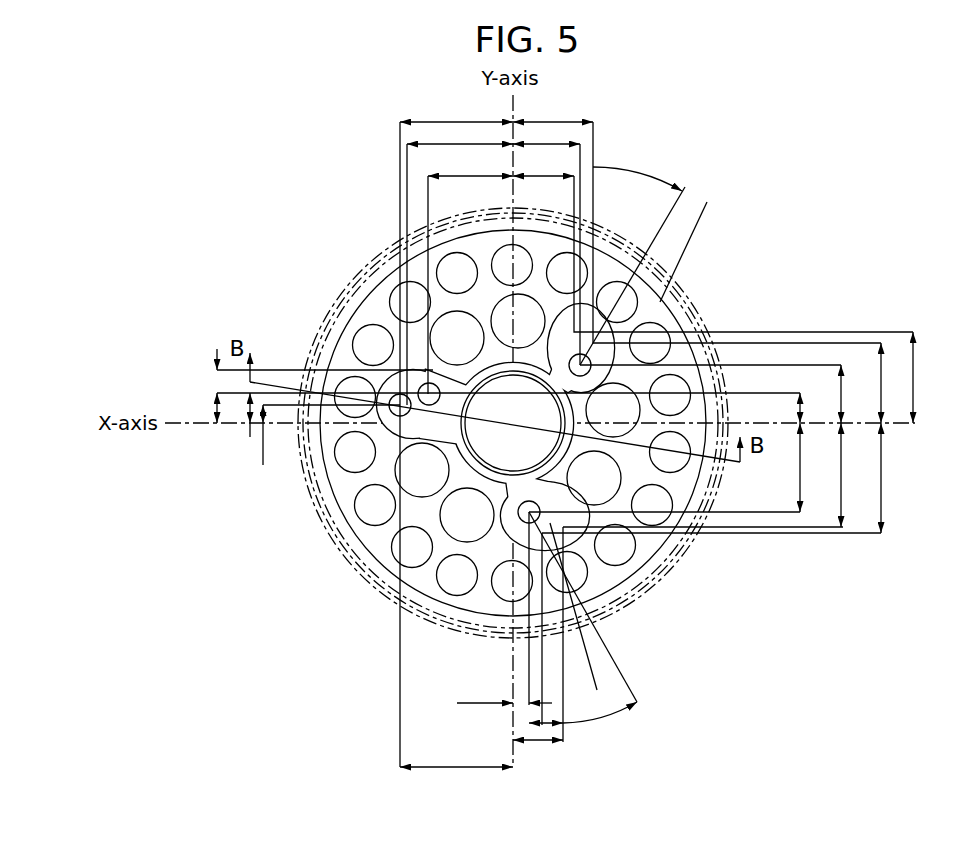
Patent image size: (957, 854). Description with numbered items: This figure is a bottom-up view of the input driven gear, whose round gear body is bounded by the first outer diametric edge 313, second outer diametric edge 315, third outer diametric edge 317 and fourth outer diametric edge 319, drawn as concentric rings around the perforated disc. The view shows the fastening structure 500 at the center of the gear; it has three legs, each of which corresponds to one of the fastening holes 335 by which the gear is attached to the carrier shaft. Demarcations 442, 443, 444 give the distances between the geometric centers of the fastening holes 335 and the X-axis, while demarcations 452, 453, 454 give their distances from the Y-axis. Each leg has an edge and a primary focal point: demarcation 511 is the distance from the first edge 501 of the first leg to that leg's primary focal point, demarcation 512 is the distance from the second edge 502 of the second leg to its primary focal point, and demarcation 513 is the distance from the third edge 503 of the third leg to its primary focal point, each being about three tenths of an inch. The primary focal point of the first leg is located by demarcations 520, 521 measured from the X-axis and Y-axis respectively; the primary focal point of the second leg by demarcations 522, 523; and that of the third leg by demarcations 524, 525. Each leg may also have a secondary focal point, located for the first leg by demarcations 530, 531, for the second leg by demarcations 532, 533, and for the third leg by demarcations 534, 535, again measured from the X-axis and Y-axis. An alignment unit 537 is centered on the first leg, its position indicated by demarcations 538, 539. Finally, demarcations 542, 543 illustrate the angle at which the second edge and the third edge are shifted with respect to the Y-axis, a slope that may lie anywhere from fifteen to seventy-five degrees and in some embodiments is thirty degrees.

The first outer diametric edge 313 is at (705, 325).
The second outer diametric edge 315 is at (692, 313).
The third outer diametric edge 317 is at (680, 303).
The fourth outer diametric edge 319 is at (668, 291).
The fastening holes 335 is at (545, 525).
The demarcation 442 is at (840, 394).
The demarcation 443 is at (778, 467).
The demarcation 444 is at (777, 408).
The demarcation 452 is at (546, 132).
The demarcation 453 is at (480, 703).
The demarcation 454 is at (470, 164).
The fastening structure 500 is at (402, 358).
The first edge 501 is at (423, 370).
The second edge 502 is at (521, 520).
The third edge 503 is at (660, 382).
The demarcation 511 is at (217, 349).
The demarcation 512 is at (594, 692).
The demarcation 513 is at (701, 212).
The demarcation 520 is at (193, 408).
The demarcation 521 is at (460, 132).
The demarcation 522 is at (882, 478).
The demarcation 523 is at (529, 723).
The demarcation 524 is at (879, 383).
The demarcation 525 is at (553, 110).
The demarcation 530 is at (263, 465).
The demarcation 531 is at (456, 781).
The demarcation 532 is at (841, 475).
The demarcation 533 is at (538, 750).
The demarcation 534 is at (924, 377).
The demarcation 535 is at (543, 164).
The alignment unit 537 is at (387, 422).
The demarcation 538 is at (250, 437).
The demarcation 539 is at (456, 110).
The demarcation 542 is at (600, 725).
The demarcation 543 is at (637, 170).